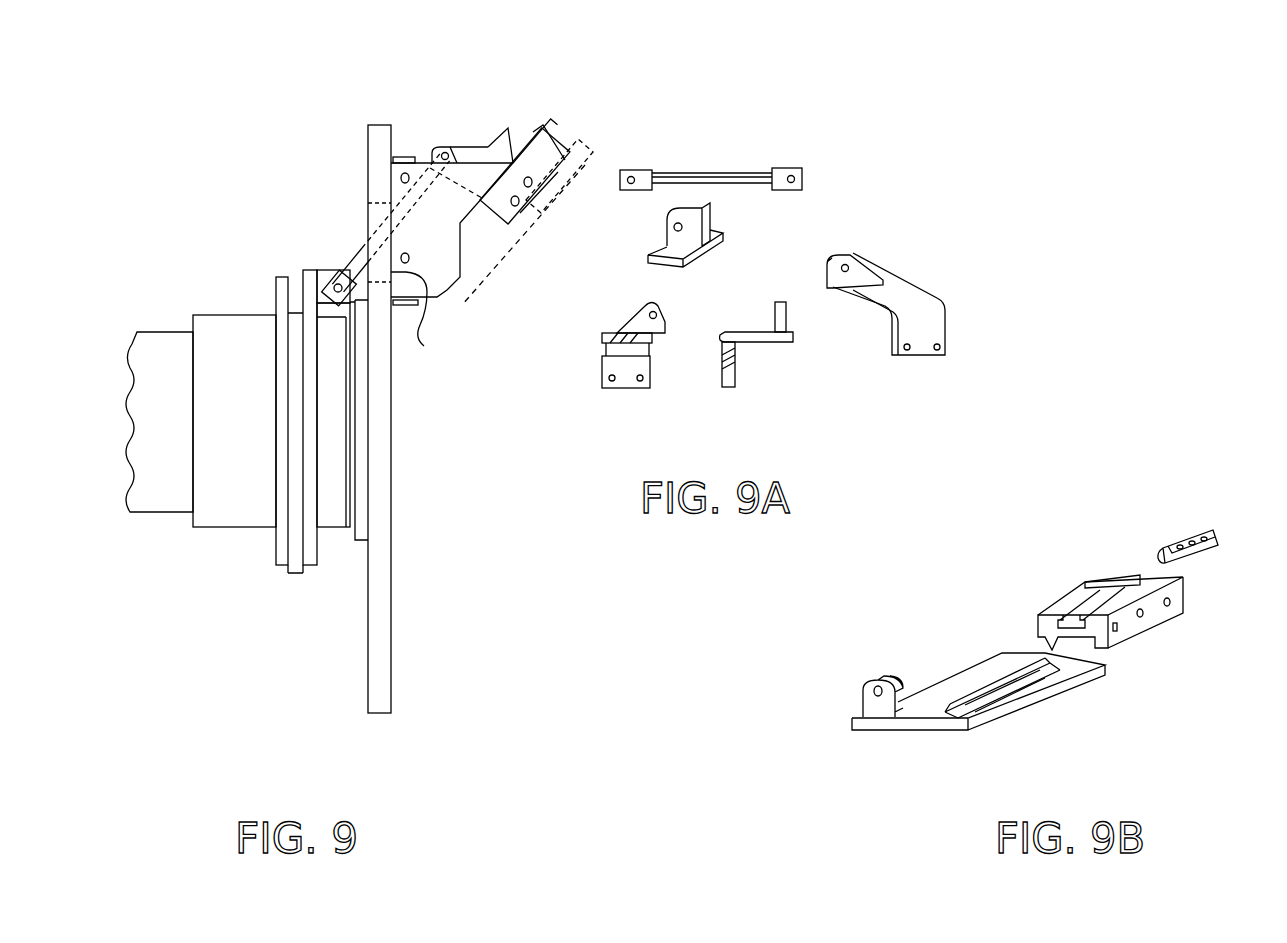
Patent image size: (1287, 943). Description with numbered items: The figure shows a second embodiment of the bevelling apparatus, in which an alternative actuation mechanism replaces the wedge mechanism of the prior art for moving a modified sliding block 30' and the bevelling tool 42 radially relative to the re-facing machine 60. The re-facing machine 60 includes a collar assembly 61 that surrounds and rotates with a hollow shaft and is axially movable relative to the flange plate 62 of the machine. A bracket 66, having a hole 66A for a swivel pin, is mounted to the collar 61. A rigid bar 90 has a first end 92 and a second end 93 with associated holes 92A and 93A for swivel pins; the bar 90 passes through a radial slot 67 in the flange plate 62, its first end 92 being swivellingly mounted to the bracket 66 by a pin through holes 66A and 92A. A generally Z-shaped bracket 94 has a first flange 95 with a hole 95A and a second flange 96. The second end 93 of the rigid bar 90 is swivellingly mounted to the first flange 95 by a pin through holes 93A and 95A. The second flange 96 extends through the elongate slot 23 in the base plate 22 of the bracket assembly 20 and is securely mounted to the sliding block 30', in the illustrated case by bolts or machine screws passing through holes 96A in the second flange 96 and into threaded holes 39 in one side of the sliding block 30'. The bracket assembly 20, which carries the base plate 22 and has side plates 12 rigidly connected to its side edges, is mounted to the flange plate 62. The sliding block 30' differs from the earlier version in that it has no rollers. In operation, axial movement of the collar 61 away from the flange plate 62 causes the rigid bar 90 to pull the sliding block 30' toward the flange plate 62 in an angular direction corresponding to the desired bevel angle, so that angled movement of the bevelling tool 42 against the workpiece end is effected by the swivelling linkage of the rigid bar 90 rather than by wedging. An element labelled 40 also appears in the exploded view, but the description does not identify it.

In FIG. 9, the side plate 12 is at (440, 250).
In FIG. 9B, the bracket assembly 20 is at (945, 633).
In FIG. 9, the base plate 22 is at (548, 130).
In FIG. 9B, the base plate 22 is at (1003, 715).
In FIG. 9B, the elongate slot 23 is at (1040, 680).
In FIG. 9B, the sliding block 30' is at (1076, 593).
In FIG. 9B, the threaded hole 39 is at (1117, 630).
In FIG. 9B, the clamp bar 40 is at (1170, 525).
In FIG. 9, the bevelling tool 42 is at (524, 228).
In FIG. 9, the re-facing machine 60 is at (205, 240).
In FIG. 9, the collar assembly 61 is at (272, 556).
In FIG. 9, the flange plate 62 is at (368, 632).
In FIG. 9, the bracket 66 is at (323, 267).
In FIG. 9A, the bracket 66 is at (714, 214).
In FIG. 9A, the hole 66A is at (674, 226).
In FIG. 9, the radial slot 67 is at (395, 275).
In FIG. 9, the rigid bar 90 is at (357, 263).
In FIG. 9A, the rigid bar 90 is at (708, 178).
In FIG. 9, the first end 92 is at (343, 263).
In FIG. 9A, the first end 92 is at (632, 165).
In FIG. 9A, the hole 92A is at (628, 190).
In FIG. 9, the second end 93 is at (444, 147).
In FIG. 9A, the second end 93 is at (791, 162).
In FIG. 9A, the hole 93A is at (795, 190).
In FIG. 9, the bracket 94 is at (493, 142).
In FIG. 9A, the bracket 94 is at (758, 360).
In FIG. 9, the first flange 95 is at (452, 146).
In FIG. 9A, the first flange 95 is at (625, 325).
In FIG. 9A, the hole 95A is at (660, 315).
In FIG. 9, the second flange 96 is at (504, 150).
In FIG. 9A, the second flange 96 is at (590, 372).
In FIG. 9A, the hole 96A is at (612, 382).